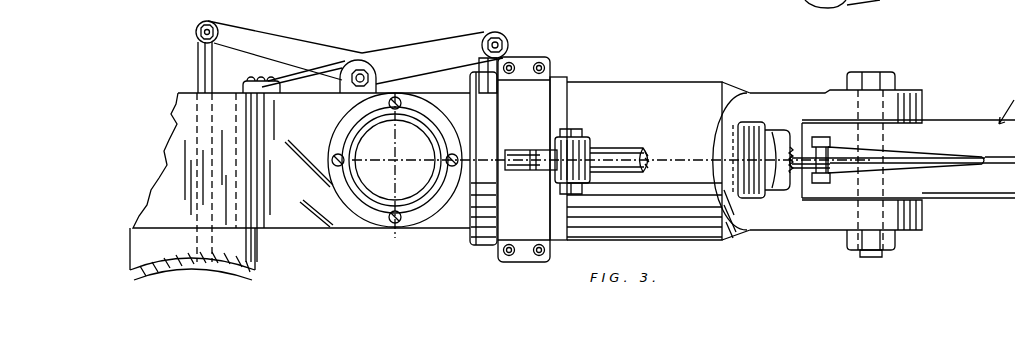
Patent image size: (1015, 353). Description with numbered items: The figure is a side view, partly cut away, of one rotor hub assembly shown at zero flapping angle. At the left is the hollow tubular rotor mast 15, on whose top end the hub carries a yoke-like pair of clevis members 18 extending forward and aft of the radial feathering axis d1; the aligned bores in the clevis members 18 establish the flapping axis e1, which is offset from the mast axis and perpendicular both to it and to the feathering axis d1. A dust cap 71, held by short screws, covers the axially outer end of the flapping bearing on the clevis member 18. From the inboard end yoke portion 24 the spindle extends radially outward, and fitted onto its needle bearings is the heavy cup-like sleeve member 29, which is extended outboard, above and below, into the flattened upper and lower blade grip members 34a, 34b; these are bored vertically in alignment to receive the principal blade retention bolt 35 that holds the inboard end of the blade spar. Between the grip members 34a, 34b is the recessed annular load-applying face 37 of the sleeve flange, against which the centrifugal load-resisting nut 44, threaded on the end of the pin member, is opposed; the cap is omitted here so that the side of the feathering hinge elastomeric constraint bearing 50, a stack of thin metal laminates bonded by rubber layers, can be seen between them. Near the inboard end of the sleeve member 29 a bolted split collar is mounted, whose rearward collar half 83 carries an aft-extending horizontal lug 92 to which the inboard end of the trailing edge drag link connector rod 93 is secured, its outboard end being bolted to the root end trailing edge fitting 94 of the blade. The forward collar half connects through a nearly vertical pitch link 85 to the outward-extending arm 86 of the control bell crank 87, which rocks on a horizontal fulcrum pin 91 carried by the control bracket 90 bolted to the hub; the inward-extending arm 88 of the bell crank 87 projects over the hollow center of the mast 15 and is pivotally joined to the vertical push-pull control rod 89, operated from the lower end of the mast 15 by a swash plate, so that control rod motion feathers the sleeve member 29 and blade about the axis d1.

The rotor mast 15 is at (225, 254).
The clevis members 18 is at (337, 222).
The inboard end yoke portion 24 is at (455, 214).
The sleeve member 29 is at (689, 68).
The upper blade grip member 34a is at (800, 95).
The lower blade grip member 34b is at (923, 218).
The principal blade retention bolt 35 is at (884, 254).
The load-applying face 37 is at (733, 140).
The centrifugal load-resisting nut 44 is at (780, 192).
The feathering hinge elastomeric constraint bearing 50 is at (760, 122).
The dust cap 71 is at (366, 140).
The rearward collar half 83 is at (540, 100).
The pitch link 85 is at (479, 68).
The outward-extending arm 86 is at (465, 41).
The control bell crank 87 is at (395, 49).
The inward-extending arm 88 is at (288, 24).
The push-pull control rod 89 is at (198, 63).
The control bracket 90 is at (332, 76).
The fulcrum pin 91 is at (365, 70).
The horizontal lug 92 is at (585, 140).
The trailing edge drag link connector rod 93 is at (620, 150).
The root end trailing edge fitting 94 is at (872, 160).
The flapping axis e1 is at (386, 164).
The feathering axis d1 is at (426, 163).